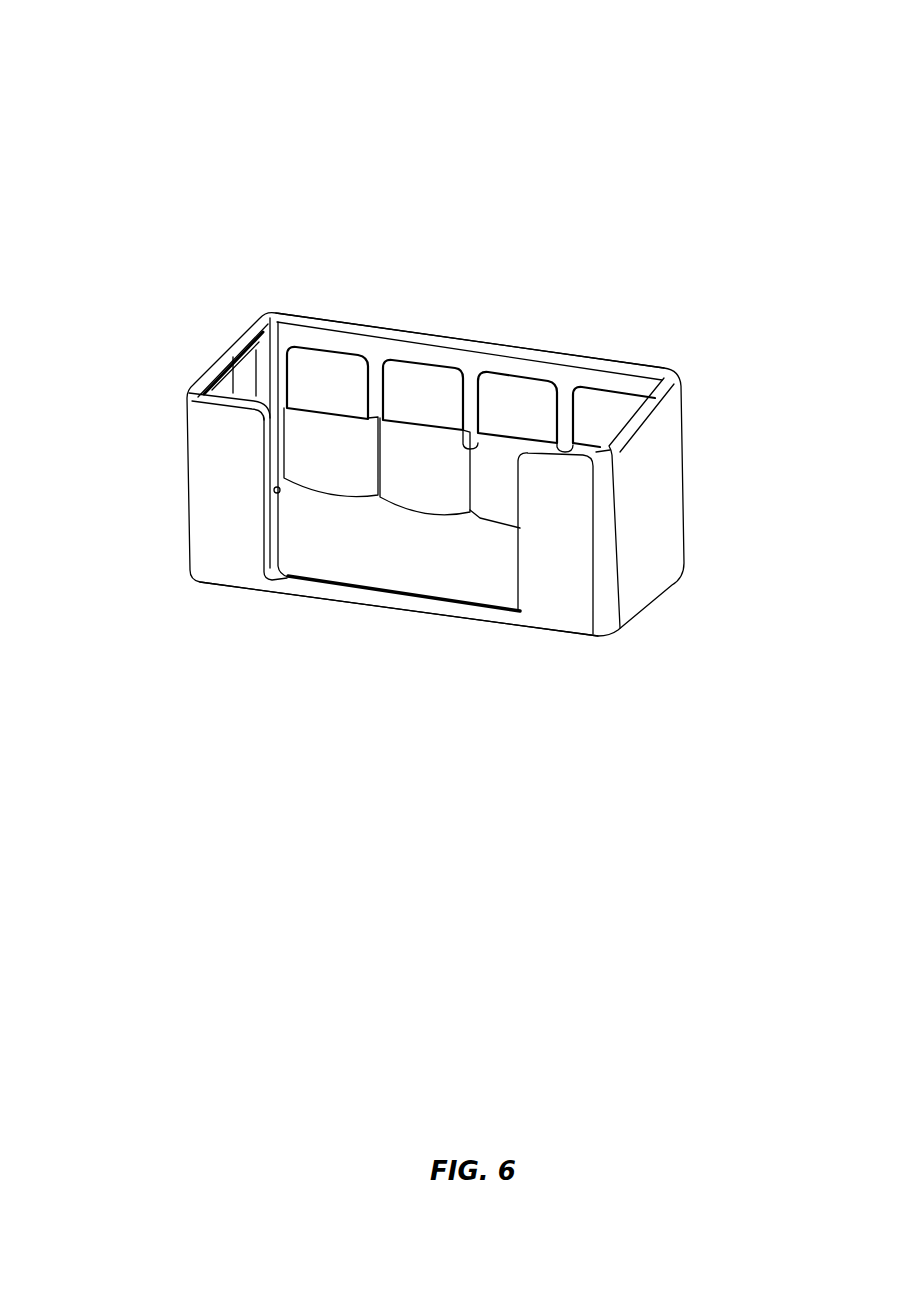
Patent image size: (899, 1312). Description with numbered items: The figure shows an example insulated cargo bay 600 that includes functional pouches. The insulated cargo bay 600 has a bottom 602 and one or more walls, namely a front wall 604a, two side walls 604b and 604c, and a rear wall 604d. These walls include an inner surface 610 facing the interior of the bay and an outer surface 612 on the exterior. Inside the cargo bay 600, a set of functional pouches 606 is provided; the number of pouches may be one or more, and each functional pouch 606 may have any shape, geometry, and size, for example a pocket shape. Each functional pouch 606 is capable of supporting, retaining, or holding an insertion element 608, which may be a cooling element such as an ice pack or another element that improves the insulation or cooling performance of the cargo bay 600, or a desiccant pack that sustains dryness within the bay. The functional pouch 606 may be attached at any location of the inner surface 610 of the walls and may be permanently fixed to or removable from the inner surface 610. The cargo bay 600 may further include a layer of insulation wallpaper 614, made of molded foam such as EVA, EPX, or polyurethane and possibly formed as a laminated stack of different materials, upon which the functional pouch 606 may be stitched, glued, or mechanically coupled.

The insulated cargo bay 600 is at (90, 72).
The bottom 602 is at (392, 575).
The front wall 604a is at (217, 560).
The side wall 604b is at (187, 470).
The side wall 604c is at (662, 503).
The rear wall 604d is at (525, 365).
The functional pouch 606 is at (327, 483).
The insertion element 608 is at (438, 367).
The inner surface 610 is at (602, 377).
The outer surface 612 is at (662, 418).
The insulation wallpaper 614 is at (222, 367).